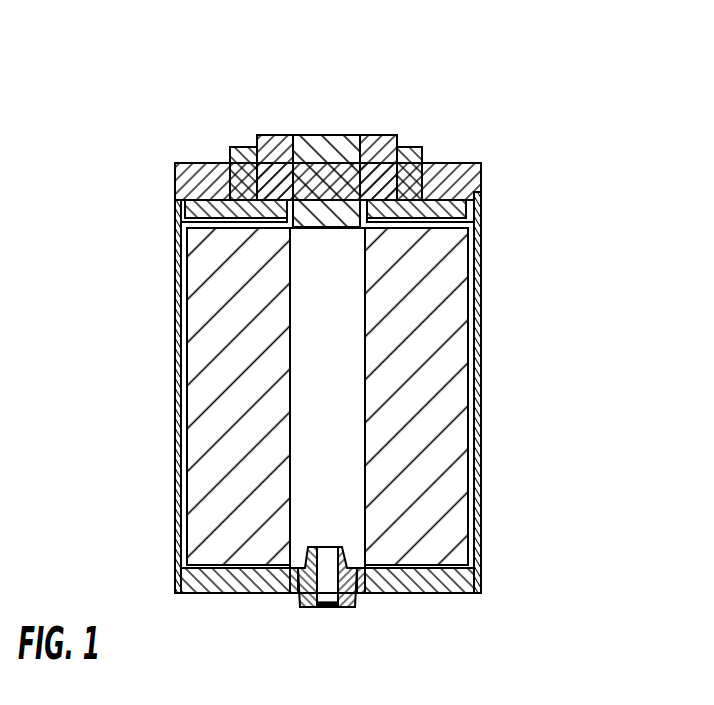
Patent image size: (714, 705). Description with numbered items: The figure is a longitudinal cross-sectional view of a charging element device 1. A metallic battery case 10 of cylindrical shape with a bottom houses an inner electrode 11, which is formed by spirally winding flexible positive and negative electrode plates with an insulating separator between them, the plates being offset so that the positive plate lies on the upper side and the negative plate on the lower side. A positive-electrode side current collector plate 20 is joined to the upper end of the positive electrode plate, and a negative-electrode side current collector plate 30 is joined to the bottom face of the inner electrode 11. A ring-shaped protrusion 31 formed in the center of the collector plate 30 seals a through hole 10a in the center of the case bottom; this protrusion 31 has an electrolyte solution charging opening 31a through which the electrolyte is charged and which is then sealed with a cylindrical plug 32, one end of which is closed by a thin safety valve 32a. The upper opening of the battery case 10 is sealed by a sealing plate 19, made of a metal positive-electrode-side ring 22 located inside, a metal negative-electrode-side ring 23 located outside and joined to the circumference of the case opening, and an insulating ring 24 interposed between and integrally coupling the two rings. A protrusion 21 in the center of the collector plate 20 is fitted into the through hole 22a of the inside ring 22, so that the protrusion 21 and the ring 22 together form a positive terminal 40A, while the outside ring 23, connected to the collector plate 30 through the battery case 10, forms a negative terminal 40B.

The charging element device 1 is at (133, 259).
The battery case 10 is at (480, 315).
The through hole 10a is at (297, 590).
The inner electrode 11 is at (422, 407).
The sealing plate 19 is at (458, 131).
The positive-electrode side current collector plate 20 is at (203, 207).
The protrusion 21 is at (347, 135).
The positive-electrode-side ring 22 is at (298, 136).
The through hole 22a is at (308, 165).
The negative-electrode-side ring 23 is at (240, 215).
The insulating ring 24 is at (417, 146).
The negative-electrode side current collector plate 30 is at (210, 560).
The ring-shaped protrusion 31 is at (400, 590).
The electrolyte solution charging opening 31a is at (345, 610).
The plug 32 is at (310, 608).
The safety valve 32a is at (327, 612).
The positive terminal 40A is at (311, 110).
The negative terminal 40B is at (243, 173).